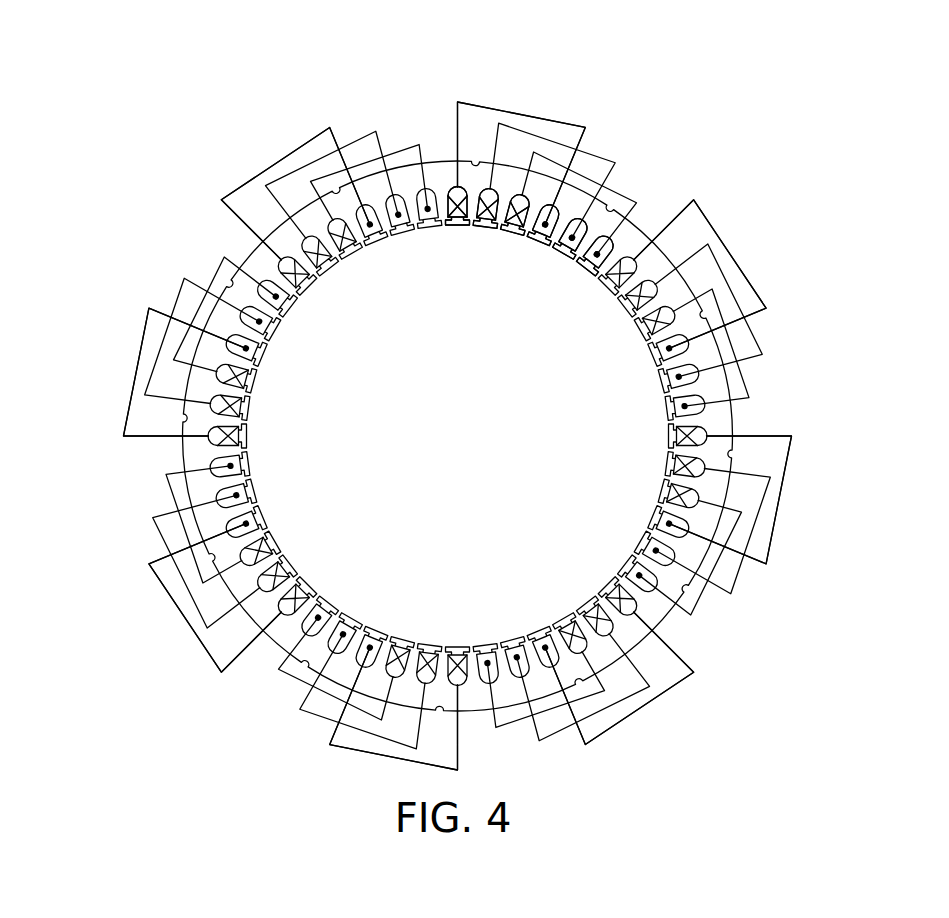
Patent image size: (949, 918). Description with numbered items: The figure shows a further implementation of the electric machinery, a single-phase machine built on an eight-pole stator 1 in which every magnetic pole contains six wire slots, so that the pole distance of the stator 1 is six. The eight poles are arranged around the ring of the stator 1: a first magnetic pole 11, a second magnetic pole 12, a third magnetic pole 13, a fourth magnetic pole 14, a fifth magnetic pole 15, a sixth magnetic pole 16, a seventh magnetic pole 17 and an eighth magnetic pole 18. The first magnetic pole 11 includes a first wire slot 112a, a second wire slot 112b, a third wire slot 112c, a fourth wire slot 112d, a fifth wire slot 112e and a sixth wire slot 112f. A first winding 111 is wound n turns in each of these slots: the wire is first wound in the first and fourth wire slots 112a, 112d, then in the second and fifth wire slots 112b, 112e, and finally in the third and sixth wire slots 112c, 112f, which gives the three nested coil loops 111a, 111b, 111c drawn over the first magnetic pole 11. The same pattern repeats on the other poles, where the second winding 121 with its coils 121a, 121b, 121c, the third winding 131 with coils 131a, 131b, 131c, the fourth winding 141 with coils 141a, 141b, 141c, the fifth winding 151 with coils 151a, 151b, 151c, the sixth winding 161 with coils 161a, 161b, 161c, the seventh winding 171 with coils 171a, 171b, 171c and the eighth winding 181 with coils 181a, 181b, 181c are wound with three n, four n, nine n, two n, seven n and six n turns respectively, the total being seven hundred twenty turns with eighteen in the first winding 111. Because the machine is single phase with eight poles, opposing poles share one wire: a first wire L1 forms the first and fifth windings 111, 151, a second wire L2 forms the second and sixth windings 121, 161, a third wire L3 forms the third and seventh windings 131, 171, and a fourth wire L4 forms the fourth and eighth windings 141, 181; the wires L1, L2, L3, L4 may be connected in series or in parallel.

The 8-pole stator 1 is at (801, 457).
The first magnetic pole 11 is at (591, 168).
The first winding 111 is at (597, 172).
The first coil 111a is at (545, 185).
The second coil 111b is at (577, 228).
The third coil 111c is at (602, 248).
The first wire slot 112a is at (455, 226).
The second wire slot 112b is at (485, 227).
The third wire slot 112c is at (510, 230).
The fourth wire slot 112d is at (538, 242).
The fifth wire slot 112e is at (562, 253).
The sixth wire slot 112f is at (583, 270).
The second magnetic pole 12 is at (737, 314).
The second winding 121 is at (741, 314).
The coil 121a is at (674, 348).
The coil 121b is at (683, 377).
The coil 121c is at (688, 406).
The third magnetic pole 13 is at (759, 523).
The third winding 131 is at (759, 529).
The coil 131a is at (673, 526).
The coil 131b is at (659, 552).
The coil 131c is at (642, 576).
The fourth magnetic pole 14 is at (610, 686).
The fourth winding 141 is at (610, 690).
The coil 141a is at (550, 651).
The coil 141b is at (521, 661).
The coil 141c is at (491, 668).
The fifth magnetic pole 15 is at (333, 699).
The fifth winding 151 is at (327, 699).
The coil 151a is at (367, 653).
The coil 151b is at (340, 639).
The coil 151c is at (315, 623).
The sixth magnetic pole 16 is at (171, 558).
The sixth winding 161 is at (167, 558).
The coil 161a is at (243, 526).
The coil 161b is at (234, 497).
The coil 161c is at (228, 467).
The seventh magnetic pole 17 is at (183, 324).
The seventh winding 171 is at (183, 318).
The coil 171a is at (243, 347).
The coil 171b is at (257, 320).
The coil 171c is at (273, 295).
The eighth magnetic pole 18 is at (335, 166).
The eighth winding 181 is at (335, 162).
The coil 181a is at (367, 217).
The coil 181b is at (395, 207).
The coil 181c is at (426, 200).
The first wire L1 is at (503, 112).
The second wire L2 is at (712, 226).
The third wire L3 is at (786, 472).
The fourth wire L4 is at (700, 683).